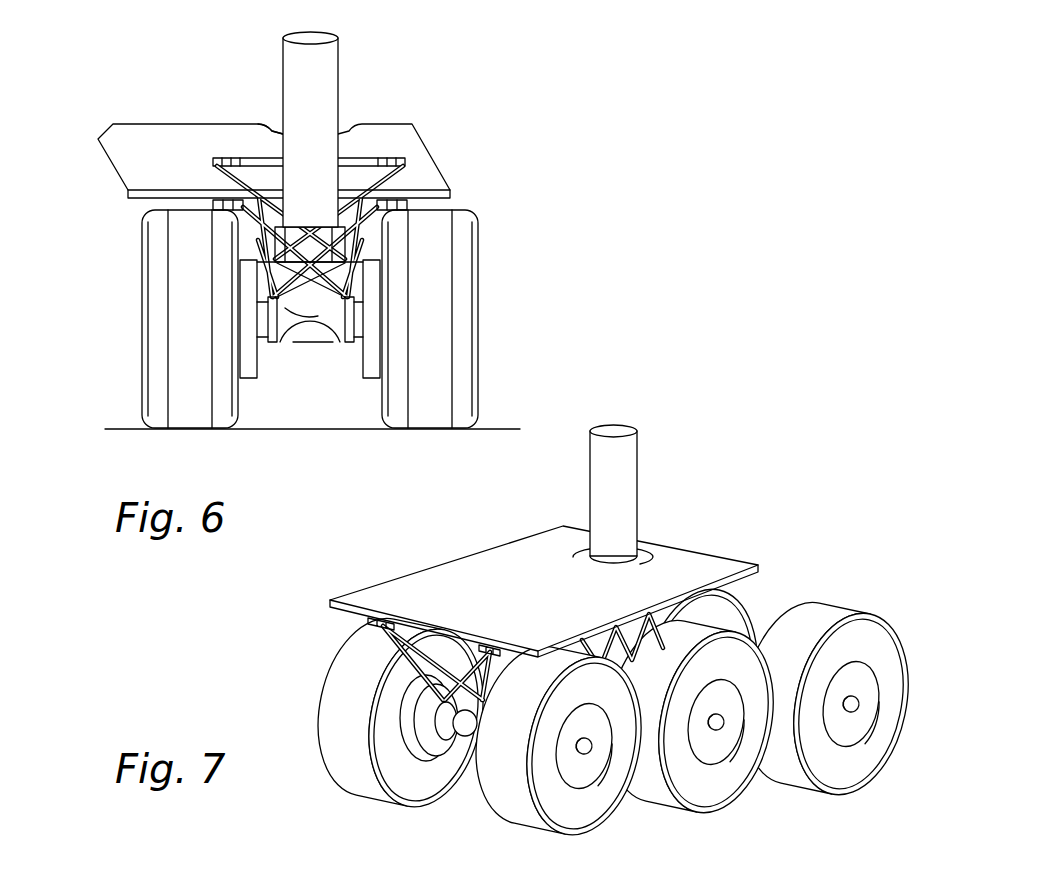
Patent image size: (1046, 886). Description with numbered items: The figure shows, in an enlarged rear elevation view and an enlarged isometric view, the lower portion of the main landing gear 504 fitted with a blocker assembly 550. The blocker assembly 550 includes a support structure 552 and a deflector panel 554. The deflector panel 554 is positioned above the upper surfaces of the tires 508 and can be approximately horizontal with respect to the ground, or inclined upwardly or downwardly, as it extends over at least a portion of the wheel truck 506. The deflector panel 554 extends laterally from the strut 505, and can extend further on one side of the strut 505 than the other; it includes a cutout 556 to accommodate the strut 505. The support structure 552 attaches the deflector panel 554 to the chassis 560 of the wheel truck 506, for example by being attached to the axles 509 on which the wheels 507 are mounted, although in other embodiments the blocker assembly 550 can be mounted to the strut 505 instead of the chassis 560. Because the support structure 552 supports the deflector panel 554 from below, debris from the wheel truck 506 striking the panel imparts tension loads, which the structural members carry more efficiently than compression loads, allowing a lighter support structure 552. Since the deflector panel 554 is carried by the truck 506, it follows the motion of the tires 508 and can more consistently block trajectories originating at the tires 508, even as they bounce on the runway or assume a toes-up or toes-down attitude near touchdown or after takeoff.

In FIG. 6, the main landing gear 504 is at (230, 61).
In FIG. 6, the strut 505 is at (333, 82).
In FIG. 7, the strut 505 is at (632, 493).
In FIG. 6, the wheel truck 506 is at (128, 336).
In FIG. 7, the wheel truck 506 is at (292, 693).
In FIG. 6, the wheels 507 is at (243, 392).
In FIG. 7, the wheels 507 is at (413, 747).
In FIG. 6, the tires 508 is at (148, 265).
In FIG. 7, the tires 508 is at (590, 806).
In FIG. 6, the axles 509 is at (320, 345).
In FIG. 7, the axles 509 is at (463, 740).
In FIG. 6, the blocker assembly 550 is at (110, 163).
In FIG. 7, the blocker assembly 550 is at (463, 540).
In FIG. 6, the support structure 552 is at (300, 314).
In FIG. 7, the support structure 552 is at (404, 665).
In FIG. 6, the deflector panel 554 is at (150, 137).
In FIG. 7, the deflector panel 554 is at (408, 593).
In FIG. 6, the cutout 556 is at (270, 132).
In FIG. 6, the chassis 560 is at (340, 352).